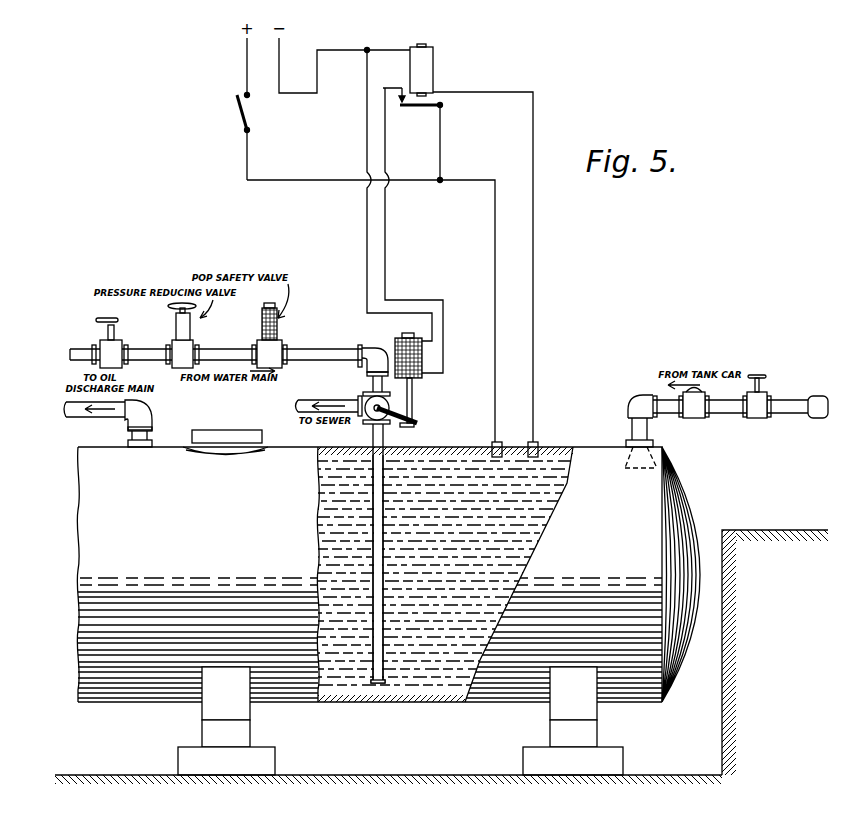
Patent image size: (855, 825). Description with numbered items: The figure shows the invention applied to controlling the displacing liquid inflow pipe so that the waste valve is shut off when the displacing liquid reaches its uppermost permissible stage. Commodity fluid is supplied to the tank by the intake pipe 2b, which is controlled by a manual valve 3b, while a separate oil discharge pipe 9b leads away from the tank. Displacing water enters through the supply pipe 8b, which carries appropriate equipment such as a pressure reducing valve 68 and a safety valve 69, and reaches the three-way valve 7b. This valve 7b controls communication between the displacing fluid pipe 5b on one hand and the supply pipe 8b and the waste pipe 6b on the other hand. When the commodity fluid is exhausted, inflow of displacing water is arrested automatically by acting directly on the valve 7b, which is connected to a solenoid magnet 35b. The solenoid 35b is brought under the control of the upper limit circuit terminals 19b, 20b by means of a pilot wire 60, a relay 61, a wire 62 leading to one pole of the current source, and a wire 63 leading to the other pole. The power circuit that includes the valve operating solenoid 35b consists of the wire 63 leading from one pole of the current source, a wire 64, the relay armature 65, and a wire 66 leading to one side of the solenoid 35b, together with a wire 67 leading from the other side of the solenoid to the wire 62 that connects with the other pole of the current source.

The pilot wire 60 is at (534, 284).
The relay 61 is at (423, 72).
The wire 62 is at (339, 50).
The wire 63 is at (247, 166).
The wire 64 is at (441, 135).
The armature 65 is at (421, 107).
The wire 66 is at (386, 206).
The wire 67 is at (367, 225).
The pressure reducing valve 68 is at (175, 343).
The safety valve 69 is at (272, 350).
The supply pipe 8b is at (318, 352).
The solenoid magnet 35b is at (440, 380).
The waste pipe 6b is at (302, 401).
The three-way valve 7b is at (364, 395).
The oil discharge pipe 9b is at (70, 417).
The upper limit circuit terminal 19b is at (497, 442).
The upper limit circuit terminal 20b is at (533, 442).
The intake pipe 2b is at (727, 412).
The manual valve 3b is at (757, 415).
The displacing fluid pipe 5b is at (379, 703).